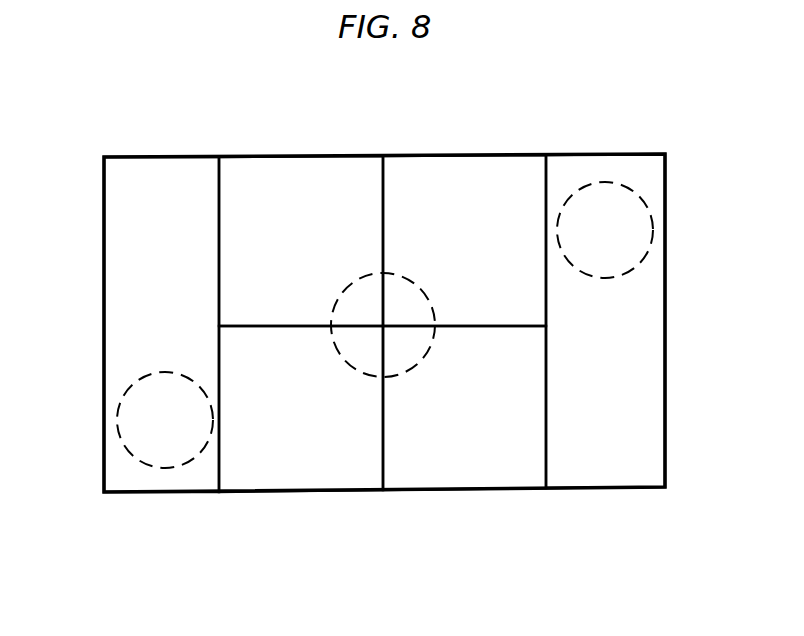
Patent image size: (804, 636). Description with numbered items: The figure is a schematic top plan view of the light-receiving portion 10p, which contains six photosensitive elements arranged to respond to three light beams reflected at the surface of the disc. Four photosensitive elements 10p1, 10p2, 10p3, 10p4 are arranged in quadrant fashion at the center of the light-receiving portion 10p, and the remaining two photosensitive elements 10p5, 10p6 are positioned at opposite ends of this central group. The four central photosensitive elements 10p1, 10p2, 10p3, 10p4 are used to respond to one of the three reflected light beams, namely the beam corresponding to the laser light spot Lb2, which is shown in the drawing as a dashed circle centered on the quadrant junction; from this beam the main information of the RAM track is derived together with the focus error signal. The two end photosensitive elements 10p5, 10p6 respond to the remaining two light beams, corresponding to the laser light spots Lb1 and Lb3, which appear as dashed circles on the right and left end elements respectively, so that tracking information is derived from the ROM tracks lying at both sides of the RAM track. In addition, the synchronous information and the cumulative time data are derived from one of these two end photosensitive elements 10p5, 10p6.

The light-receiving portion 10p is at (641, 124).
The photosensitive element 10p1 is at (305, 157).
The photosensitive element 10p2 is at (473, 157).
The photosensitive element 10p3 is at (465, 492).
The photosensitive element 10p4 is at (288, 492).
The photosensitive element 10p5 is at (665, 450).
The photosensitive element 10p6 is at (105, 470).
The laser light spot Lb1 is at (655, 212).
The laser light spot Lb2 is at (412, 368).
The laser light spot Lb3 is at (185, 466).